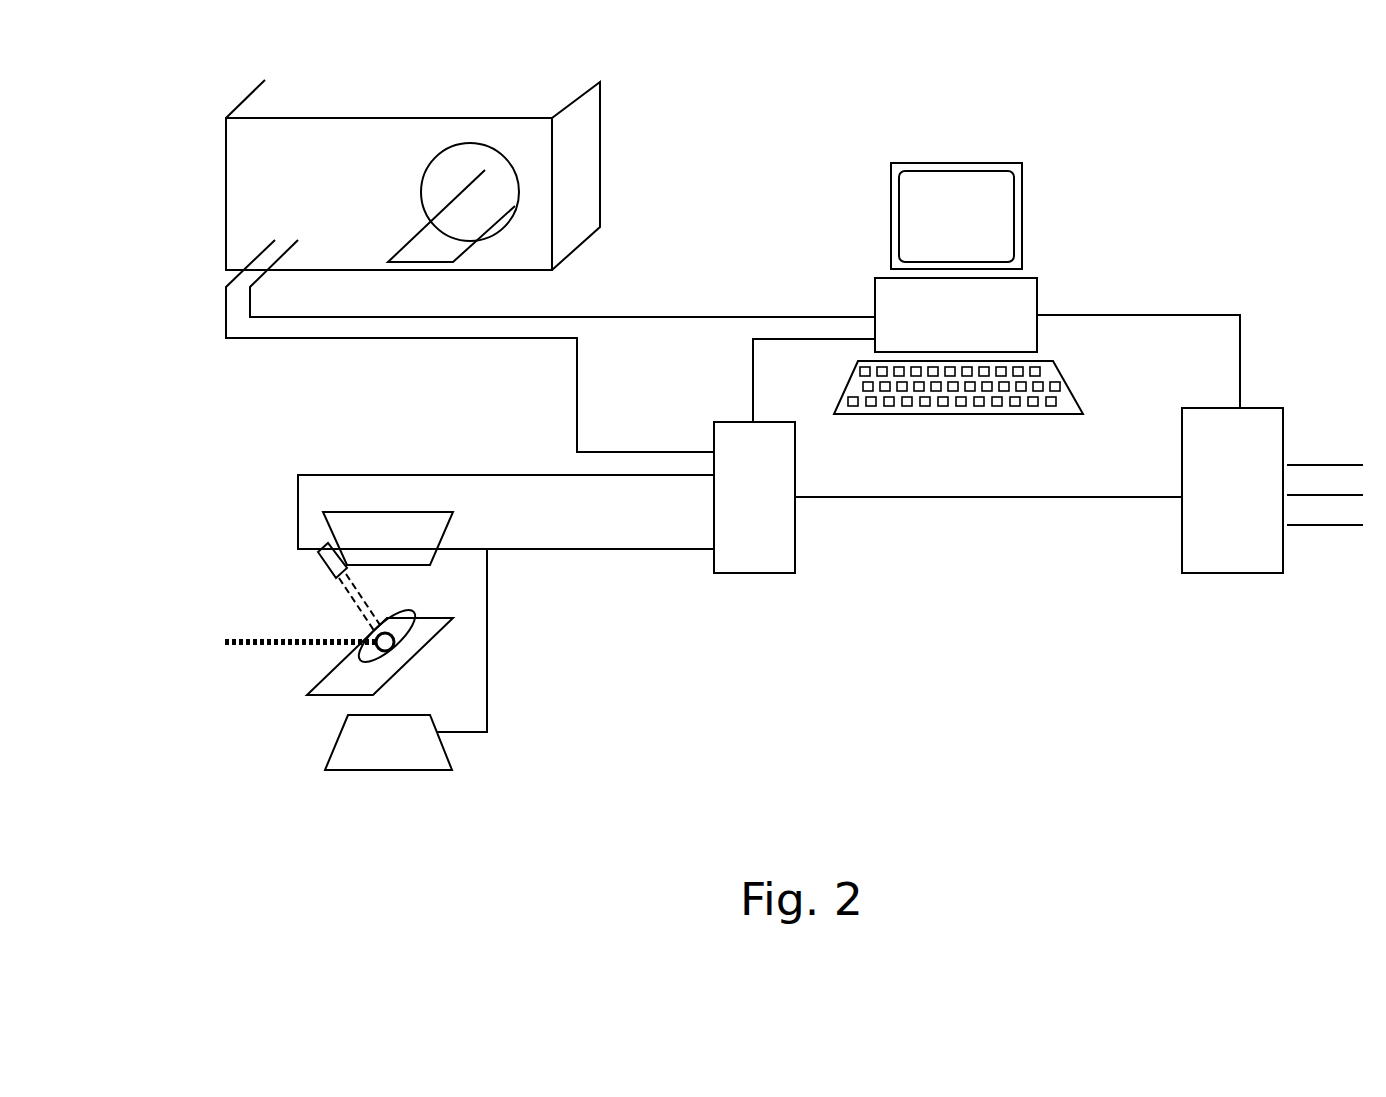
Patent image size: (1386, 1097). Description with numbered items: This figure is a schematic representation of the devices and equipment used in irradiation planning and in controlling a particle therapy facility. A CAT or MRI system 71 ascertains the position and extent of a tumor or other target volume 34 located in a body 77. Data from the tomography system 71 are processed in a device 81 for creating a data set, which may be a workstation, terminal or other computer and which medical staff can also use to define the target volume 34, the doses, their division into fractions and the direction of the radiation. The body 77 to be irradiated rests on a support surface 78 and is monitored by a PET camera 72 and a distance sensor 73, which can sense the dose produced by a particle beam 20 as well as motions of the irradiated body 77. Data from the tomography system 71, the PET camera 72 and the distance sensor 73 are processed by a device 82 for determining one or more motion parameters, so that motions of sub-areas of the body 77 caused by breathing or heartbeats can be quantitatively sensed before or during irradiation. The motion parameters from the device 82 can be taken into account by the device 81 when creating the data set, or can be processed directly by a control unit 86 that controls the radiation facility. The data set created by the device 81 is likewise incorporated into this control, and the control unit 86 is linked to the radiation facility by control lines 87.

The particle beam 20 is at (292, 648).
The target volume 34 is at (394, 645).
The CAT or MRI system 71 is at (593, 170).
The PET camera 72 is at (345, 528).
The distance sensor 73 is at (323, 560).
The body 77 is at (397, 625).
The support surface 78 is at (373, 678).
The device for creating a data set 81 is at (1020, 300).
The device for determining motion parameters 82 is at (747, 557).
The control unit 86 is at (1263, 573).
The control lines 87 is at (1338, 465).